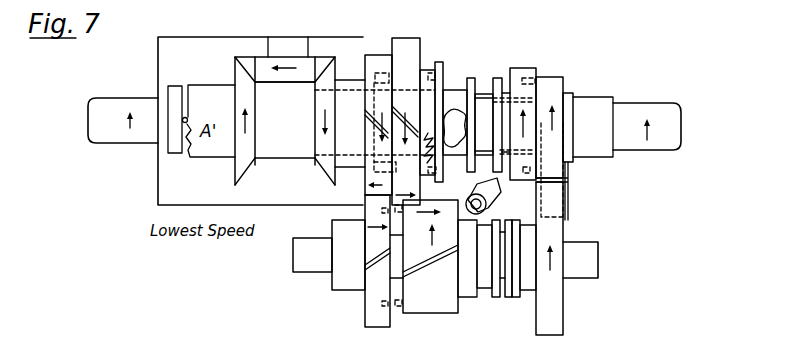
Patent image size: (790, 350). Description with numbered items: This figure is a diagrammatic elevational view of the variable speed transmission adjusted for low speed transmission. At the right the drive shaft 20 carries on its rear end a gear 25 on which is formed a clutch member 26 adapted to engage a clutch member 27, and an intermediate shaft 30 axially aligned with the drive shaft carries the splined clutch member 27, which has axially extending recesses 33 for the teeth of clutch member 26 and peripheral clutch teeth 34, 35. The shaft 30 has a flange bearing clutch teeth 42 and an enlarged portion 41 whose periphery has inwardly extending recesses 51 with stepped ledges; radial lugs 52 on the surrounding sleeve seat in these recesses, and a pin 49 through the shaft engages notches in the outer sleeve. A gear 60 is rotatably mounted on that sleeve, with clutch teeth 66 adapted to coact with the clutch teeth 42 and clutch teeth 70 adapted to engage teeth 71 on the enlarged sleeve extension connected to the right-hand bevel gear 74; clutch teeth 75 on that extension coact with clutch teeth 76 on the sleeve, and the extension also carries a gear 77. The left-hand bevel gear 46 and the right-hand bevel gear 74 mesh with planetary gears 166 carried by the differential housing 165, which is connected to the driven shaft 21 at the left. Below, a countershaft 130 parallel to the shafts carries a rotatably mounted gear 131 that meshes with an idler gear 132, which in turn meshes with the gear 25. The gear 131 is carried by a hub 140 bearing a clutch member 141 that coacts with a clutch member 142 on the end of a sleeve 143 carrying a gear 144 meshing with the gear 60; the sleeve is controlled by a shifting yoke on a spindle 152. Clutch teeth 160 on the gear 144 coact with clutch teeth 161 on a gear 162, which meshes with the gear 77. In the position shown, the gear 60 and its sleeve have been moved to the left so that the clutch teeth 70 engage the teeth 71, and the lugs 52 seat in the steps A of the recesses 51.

The drive shaft 20 is at (670, 89).
The driven shaft 21 is at (113, 138).
The gear 25 is at (566, 85).
The clutch member 26 is at (545, 76).
The clutch member 27 is at (531, 73).
The intermediate shaft 30 is at (482, 105).
The circumferential axially extending recesses 33 is at (543, 68).
The clutch teeth 34 is at (514, 67).
The clutch teeth 35 is at (498, 186).
The enlarged portion 41 is at (457, 152).
The clutch teeth 42 is at (474, 78).
The bevel gear 46 is at (232, 169).
The pin 49 is at (183, 118).
The recesses 51 is at (452, 117).
The lugs 52 is at (436, 173).
The gear 60 is at (418, 36).
The clutch teeth 66 is at (438, 62).
The clutch teeth 70 is at (396, 56).
The teeth 71 is at (386, 66).
The bevel gear 74 is at (322, 174).
The clutch teeth 75 is at (405, 144).
The clutch teeth 76 is at (366, 79).
The gear 77 is at (398, 92).
The countershaft 130 is at (597, 245).
The gear 131 is at (563, 315).
The idler gear 132 is at (573, 181).
The hub 140 is at (509, 295).
The clutch member 141 is at (505, 298).
The clutch member 142 is at (503, 297).
The sleeve 143 is at (492, 297).
The gear 144 is at (432, 307).
The spindle 152 is at (487, 205).
The clutch teeth 160 is at (397, 306).
The clutch teeth 161 is at (380, 303).
The gear 162 is at (363, 323).
The differential housing 165 is at (221, 25).
The planetary gears 166 is at (310, 58).
The step A is at (393, 173).